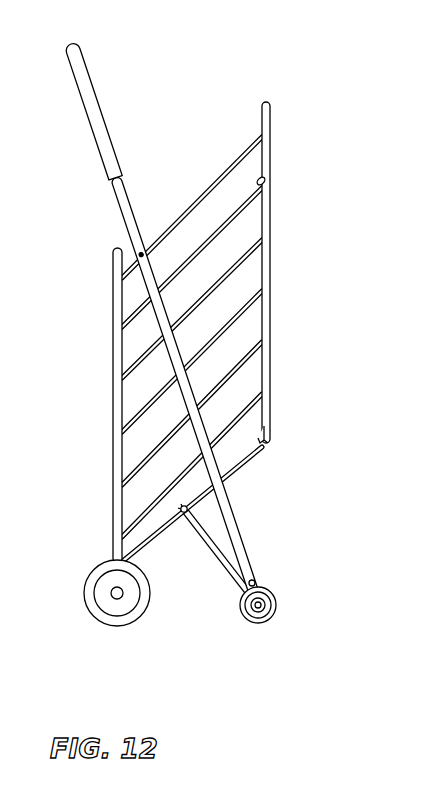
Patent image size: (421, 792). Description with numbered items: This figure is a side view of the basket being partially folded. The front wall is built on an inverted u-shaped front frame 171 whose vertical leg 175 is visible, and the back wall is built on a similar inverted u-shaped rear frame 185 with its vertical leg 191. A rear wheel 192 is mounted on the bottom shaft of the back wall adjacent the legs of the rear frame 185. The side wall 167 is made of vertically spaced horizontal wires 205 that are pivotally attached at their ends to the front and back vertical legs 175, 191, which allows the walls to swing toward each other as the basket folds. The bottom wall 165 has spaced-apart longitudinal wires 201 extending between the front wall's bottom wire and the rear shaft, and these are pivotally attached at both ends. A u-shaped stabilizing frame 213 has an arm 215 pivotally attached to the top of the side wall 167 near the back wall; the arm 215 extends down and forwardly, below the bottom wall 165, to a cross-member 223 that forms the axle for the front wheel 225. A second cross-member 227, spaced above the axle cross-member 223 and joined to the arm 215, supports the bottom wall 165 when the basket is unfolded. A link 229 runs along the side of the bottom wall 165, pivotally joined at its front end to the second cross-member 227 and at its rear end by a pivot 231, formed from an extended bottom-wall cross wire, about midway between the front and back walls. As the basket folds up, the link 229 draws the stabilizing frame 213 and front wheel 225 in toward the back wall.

The bottom wall 165 is at (248, 462).
The side wall 167 is at (250, 143).
The front frame 171 is at (272, 262).
The vertical leg 175 is at (211, 311).
The rear frame 185 is at (112, 346).
The vertical leg 191 is at (113, 367).
The rear wheel 192 is at (110, 610).
The longitudinal wire 201 is at (268, 447).
The horizontal wire 205 is at (247, 160).
The stabilizing frame 213 is at (88, 68).
The arm 215 is at (242, 535).
The cross-member 223 is at (276, 607).
The front wheel 225 is at (265, 600).
The second cross-member 227 is at (256, 582).
The link 229 is at (228, 555).
The pivot 231 is at (185, 516).